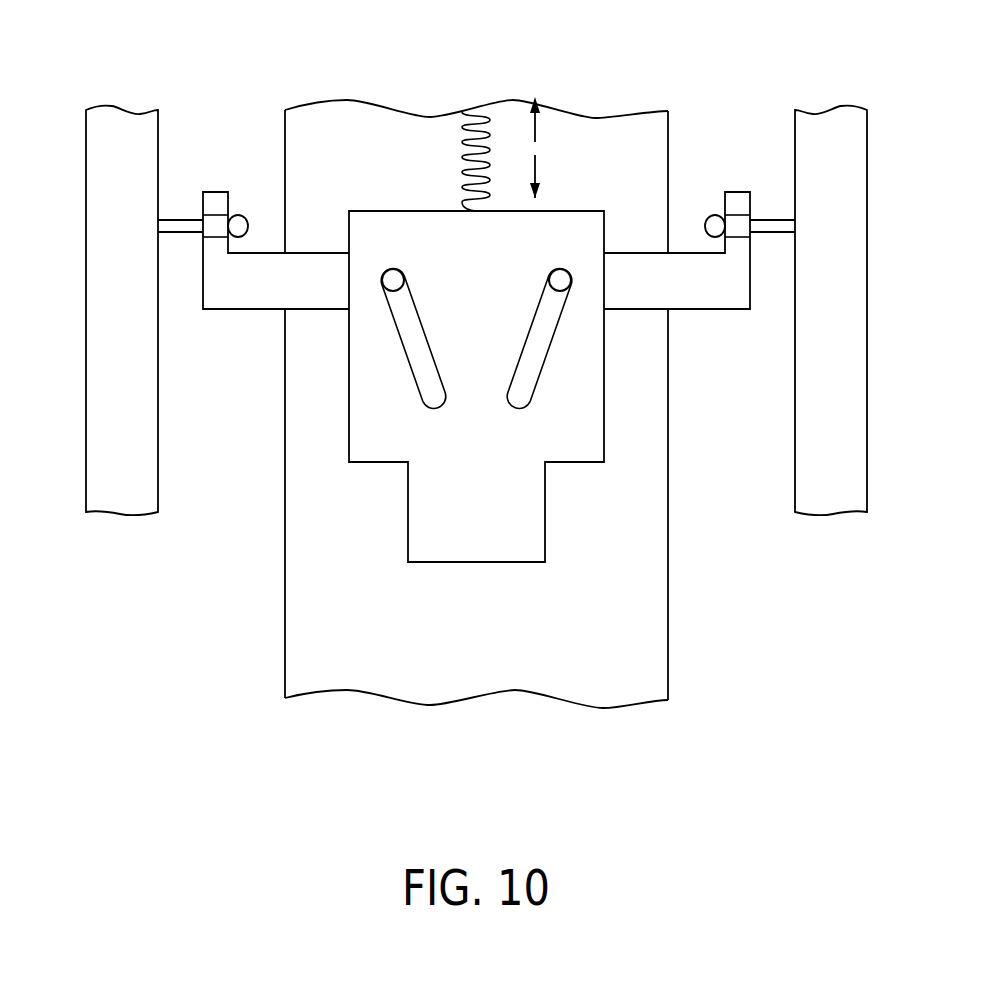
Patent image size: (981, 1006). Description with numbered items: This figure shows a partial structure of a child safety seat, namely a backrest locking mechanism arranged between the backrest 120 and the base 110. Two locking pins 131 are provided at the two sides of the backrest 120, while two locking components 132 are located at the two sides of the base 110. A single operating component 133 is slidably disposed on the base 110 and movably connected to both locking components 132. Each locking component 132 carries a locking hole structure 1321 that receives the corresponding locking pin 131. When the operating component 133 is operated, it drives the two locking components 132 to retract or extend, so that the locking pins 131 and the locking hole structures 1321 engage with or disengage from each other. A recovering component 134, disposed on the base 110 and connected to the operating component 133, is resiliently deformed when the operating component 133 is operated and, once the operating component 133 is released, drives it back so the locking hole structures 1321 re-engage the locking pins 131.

The base 110 is at (602, 643).
The backrest 120 is at (830, 475).
The locking pin 131 is at (183, 227).
The locking component 132 is at (315, 282).
The locking hole structure 1321 is at (195, 236).
The operating component 133 is at (472, 532).
The recovering component 134 is at (460, 137).